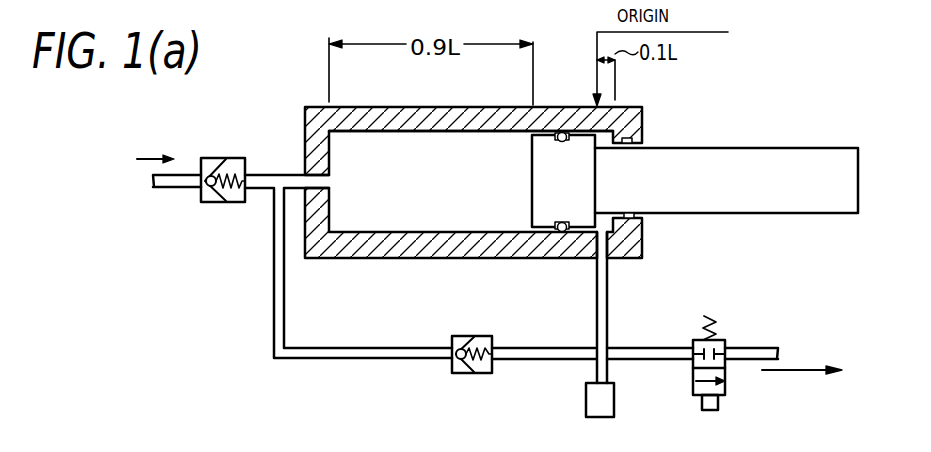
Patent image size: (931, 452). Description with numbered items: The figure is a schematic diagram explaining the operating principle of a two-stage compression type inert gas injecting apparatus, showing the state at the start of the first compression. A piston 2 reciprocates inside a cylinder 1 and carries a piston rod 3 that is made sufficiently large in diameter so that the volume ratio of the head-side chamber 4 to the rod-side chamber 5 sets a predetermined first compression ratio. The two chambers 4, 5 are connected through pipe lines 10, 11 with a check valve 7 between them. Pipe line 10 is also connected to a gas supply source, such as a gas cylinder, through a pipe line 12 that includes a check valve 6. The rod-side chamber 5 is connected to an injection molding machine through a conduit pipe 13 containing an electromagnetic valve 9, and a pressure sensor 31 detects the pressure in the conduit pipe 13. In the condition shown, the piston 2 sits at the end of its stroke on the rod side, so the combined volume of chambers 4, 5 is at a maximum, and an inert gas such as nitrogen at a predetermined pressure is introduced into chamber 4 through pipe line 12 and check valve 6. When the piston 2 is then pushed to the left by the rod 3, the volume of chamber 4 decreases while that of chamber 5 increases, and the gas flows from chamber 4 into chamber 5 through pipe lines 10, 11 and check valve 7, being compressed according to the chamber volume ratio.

The cylinder 1 is at (511, 107).
The piston 2 is at (532, 155).
The piston rod 3 is at (806, 150).
The head-side chamber 4 is at (377, 140).
The rod-side chamber 5 is at (602, 130).
The check valve 6 is at (233, 203).
The check valve 7 is at (481, 336).
The electromagnetic valve 9 is at (724, 340).
The pipe line 10 is at (370, 348).
The pipe line 11 is at (558, 348).
The pipe line 12 is at (172, 188).
The conduit pipe 13 is at (648, 348).
The pressure sensor 31 is at (614, 395).